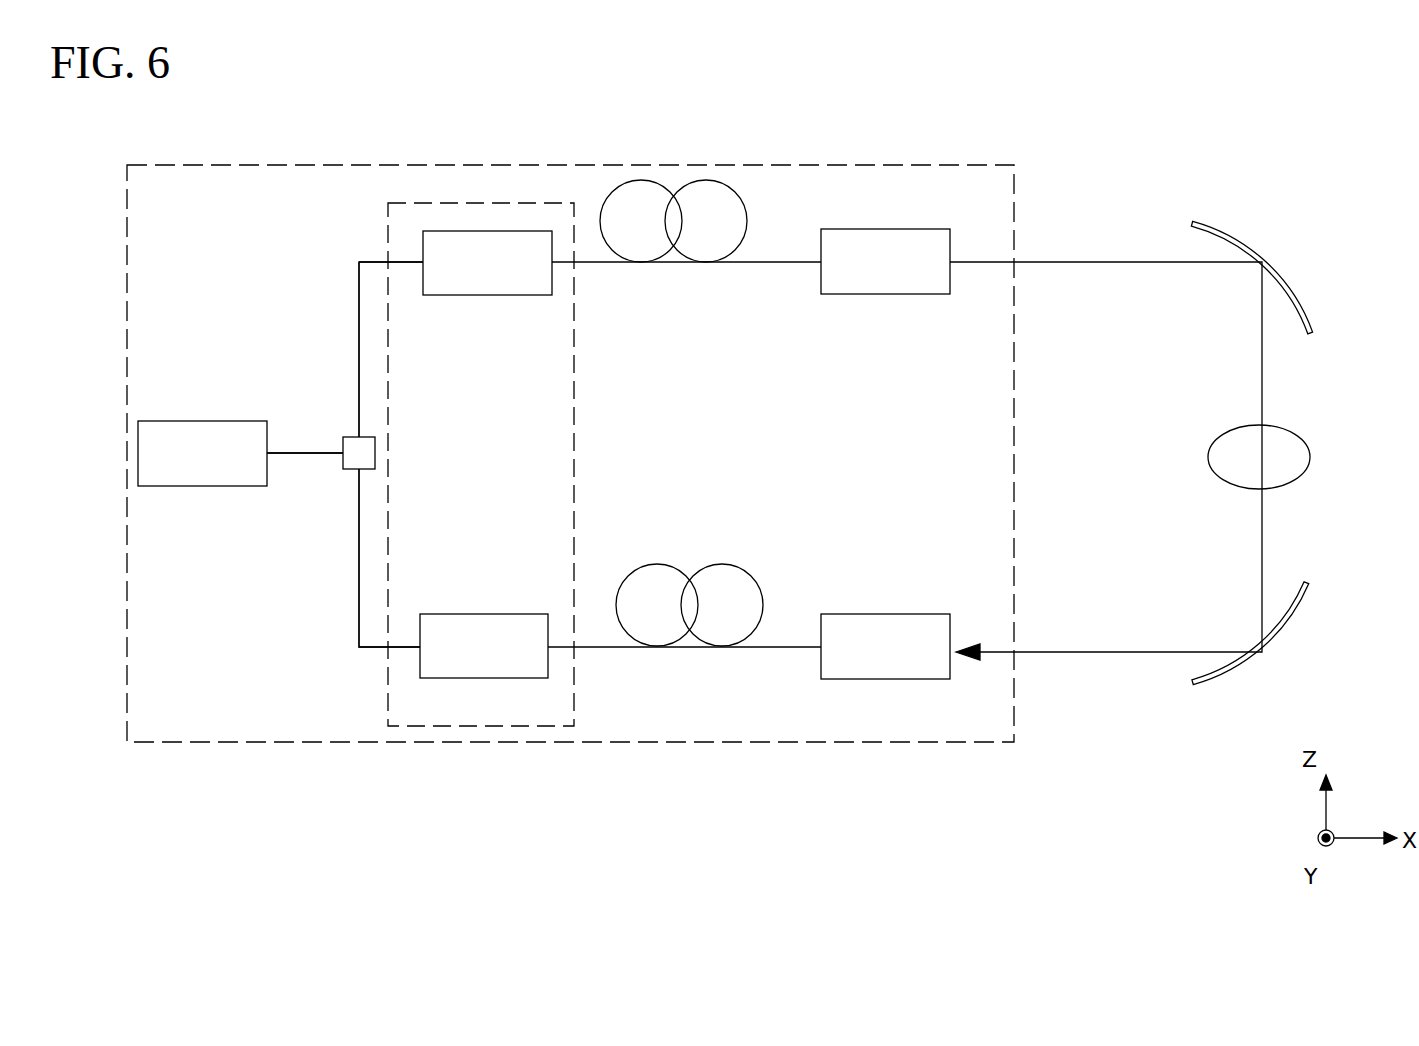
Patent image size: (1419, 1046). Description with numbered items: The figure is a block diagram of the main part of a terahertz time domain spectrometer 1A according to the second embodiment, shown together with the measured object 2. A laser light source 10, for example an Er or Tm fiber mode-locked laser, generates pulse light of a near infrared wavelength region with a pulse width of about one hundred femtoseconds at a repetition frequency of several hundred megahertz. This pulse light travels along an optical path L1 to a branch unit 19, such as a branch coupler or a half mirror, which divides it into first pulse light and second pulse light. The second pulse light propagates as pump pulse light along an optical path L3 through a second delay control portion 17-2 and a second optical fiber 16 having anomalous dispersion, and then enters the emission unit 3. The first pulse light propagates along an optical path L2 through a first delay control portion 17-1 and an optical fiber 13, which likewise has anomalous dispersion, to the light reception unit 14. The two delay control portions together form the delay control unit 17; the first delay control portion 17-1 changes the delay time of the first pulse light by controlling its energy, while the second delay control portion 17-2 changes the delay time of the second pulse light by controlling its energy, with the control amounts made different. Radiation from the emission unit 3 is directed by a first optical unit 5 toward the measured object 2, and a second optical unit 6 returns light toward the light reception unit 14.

The terahertz time domain spectrometer 1A is at (240, 742).
The measured object 2 is at (1298, 447).
The emission unit 3 is at (840, 294).
The first optical unit 5 is at (1303, 298).
The second optical unit 6 is at (1303, 598).
The laser light source 10 is at (138, 466).
The optical fiber 13 is at (722, 564).
The light reception unit 14 is at (845, 680).
The second optical fiber 16 is at (706, 183).
The delay control unit 17 is at (575, 420).
The first delay control portion 17-1 is at (507, 678).
The second delay control portion 17-2 is at (492, 296).
The branch unit 19 is at (358, 471).
The optical path L1 is at (288, 452).
The optical path L2 is at (359, 620).
The optical path L3 is at (359, 318).